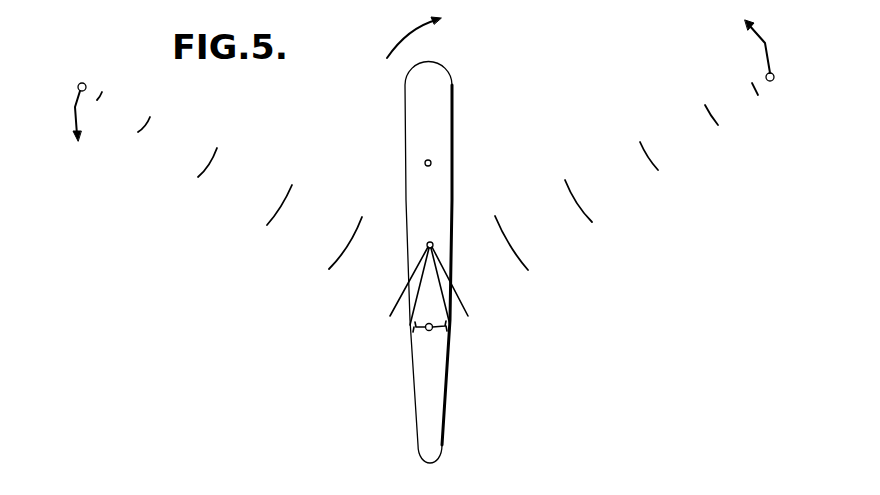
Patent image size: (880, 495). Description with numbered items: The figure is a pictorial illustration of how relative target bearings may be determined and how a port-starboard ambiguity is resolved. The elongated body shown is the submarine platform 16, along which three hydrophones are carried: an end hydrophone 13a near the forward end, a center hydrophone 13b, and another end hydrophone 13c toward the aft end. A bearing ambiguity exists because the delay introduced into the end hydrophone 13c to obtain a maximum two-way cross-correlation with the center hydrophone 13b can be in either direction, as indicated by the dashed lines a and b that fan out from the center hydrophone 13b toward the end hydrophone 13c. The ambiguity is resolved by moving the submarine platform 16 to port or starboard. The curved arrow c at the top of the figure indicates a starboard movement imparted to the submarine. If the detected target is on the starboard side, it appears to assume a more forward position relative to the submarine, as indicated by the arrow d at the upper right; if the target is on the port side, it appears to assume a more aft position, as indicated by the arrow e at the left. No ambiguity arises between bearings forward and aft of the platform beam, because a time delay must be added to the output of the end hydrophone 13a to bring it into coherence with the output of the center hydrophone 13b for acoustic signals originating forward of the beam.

The submarine platform 16 is at (439, 138).
The end hydrophone 13a is at (431, 163).
The center hydrophone 13b is at (430, 242).
The end hydrophone 13c is at (429, 331).
The dashed line a is at (410, 326).
The dashed line b is at (450, 328).
The arrow c is at (407, 33).
The arrow d is at (764, 48).
The arrow e is at (74, 112).